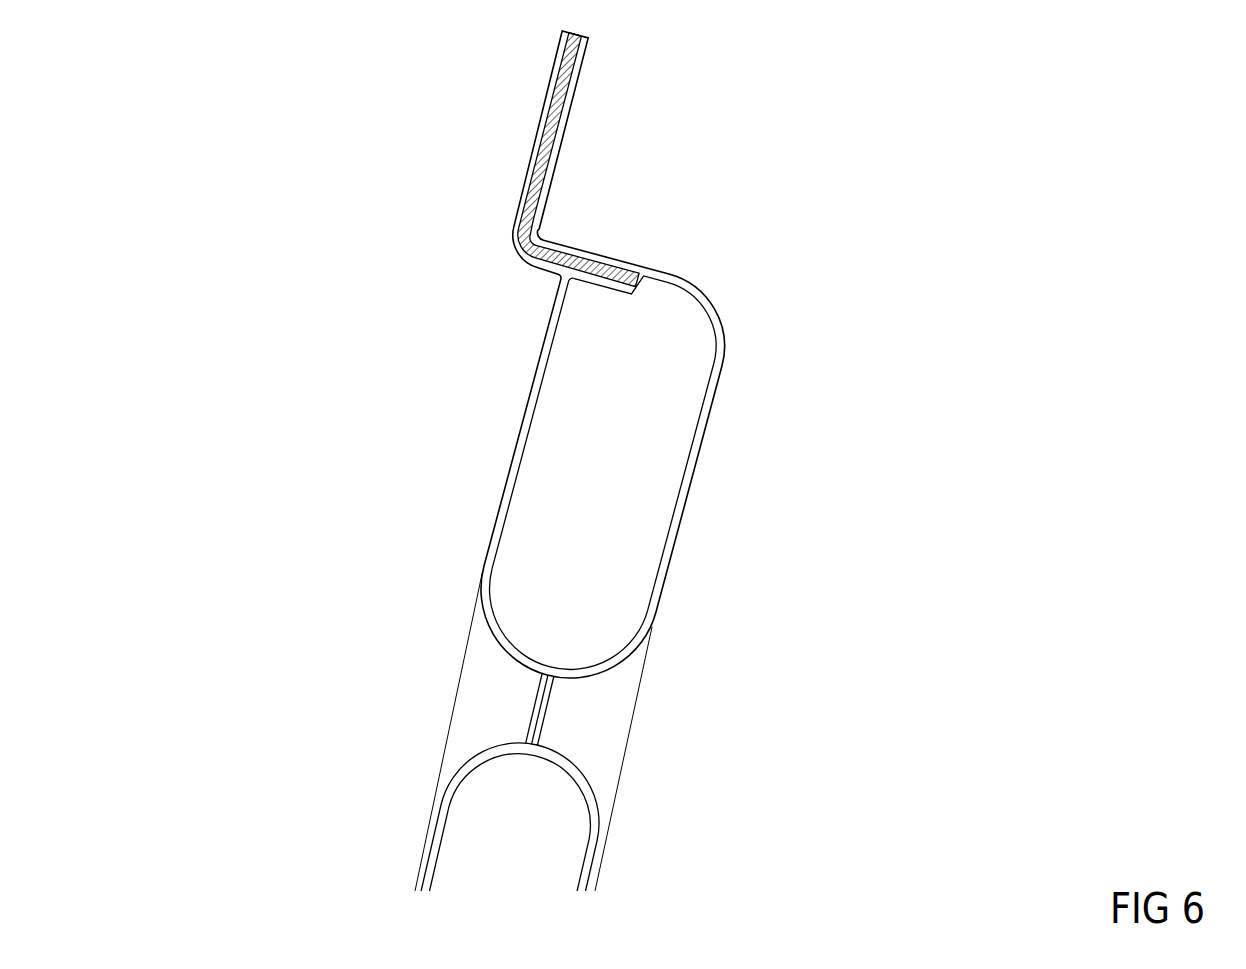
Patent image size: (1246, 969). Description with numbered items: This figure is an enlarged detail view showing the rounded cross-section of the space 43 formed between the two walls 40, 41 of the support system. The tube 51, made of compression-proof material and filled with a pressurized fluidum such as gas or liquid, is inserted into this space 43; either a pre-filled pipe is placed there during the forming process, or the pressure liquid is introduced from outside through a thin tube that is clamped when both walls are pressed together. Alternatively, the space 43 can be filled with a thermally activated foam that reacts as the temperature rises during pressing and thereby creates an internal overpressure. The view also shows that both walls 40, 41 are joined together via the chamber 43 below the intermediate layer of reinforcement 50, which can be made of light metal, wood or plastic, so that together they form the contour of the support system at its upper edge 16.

The upper edge 16 is at (503, 151).
The intermediate layer of reinforcement 50 is at (525, 237).
The wall 41 is at (548, 345).
The space 43 is at (598, 462).
The wall 40 is at (710, 318).
The tube 51 is at (697, 432).